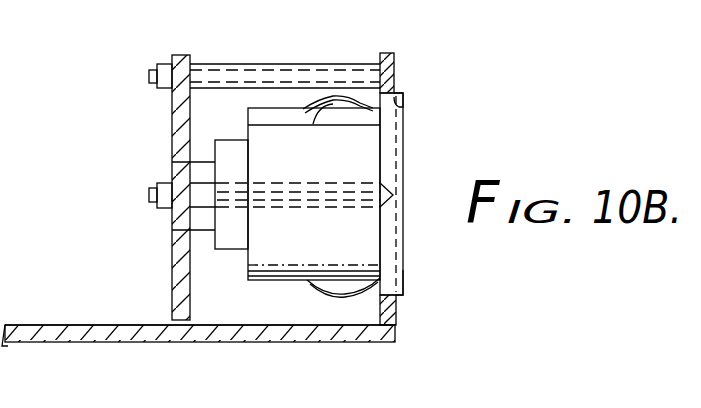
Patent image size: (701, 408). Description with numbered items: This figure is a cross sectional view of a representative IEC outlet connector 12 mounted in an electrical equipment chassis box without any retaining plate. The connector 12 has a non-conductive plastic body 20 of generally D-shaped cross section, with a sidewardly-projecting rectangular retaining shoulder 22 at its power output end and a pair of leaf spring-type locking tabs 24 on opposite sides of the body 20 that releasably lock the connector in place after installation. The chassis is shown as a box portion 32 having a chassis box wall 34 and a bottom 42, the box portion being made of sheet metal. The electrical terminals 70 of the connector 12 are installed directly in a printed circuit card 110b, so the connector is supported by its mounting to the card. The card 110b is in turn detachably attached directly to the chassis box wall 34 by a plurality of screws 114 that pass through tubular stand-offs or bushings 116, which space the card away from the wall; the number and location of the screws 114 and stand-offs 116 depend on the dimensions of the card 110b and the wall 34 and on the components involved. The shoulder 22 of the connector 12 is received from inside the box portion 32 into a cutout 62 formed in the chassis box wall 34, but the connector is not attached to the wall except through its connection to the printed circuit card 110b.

The IEC outlet connector 12 is at (404, 154).
The body 20 is at (268, 282).
The retaining shoulder 22 is at (400, 284).
The locking tabs 24 is at (333, 105).
The box portion 32 is at (155, 348).
The chassis box wall 34 is at (393, 57).
The bottom 42 is at (53, 324).
The cutout 62 is at (403, 105).
The electrical terminals 70 is at (203, 160).
The printed circuit card 110b is at (172, 104).
The screws 114 is at (332, 63).
The stand-offs 116 is at (247, 63).